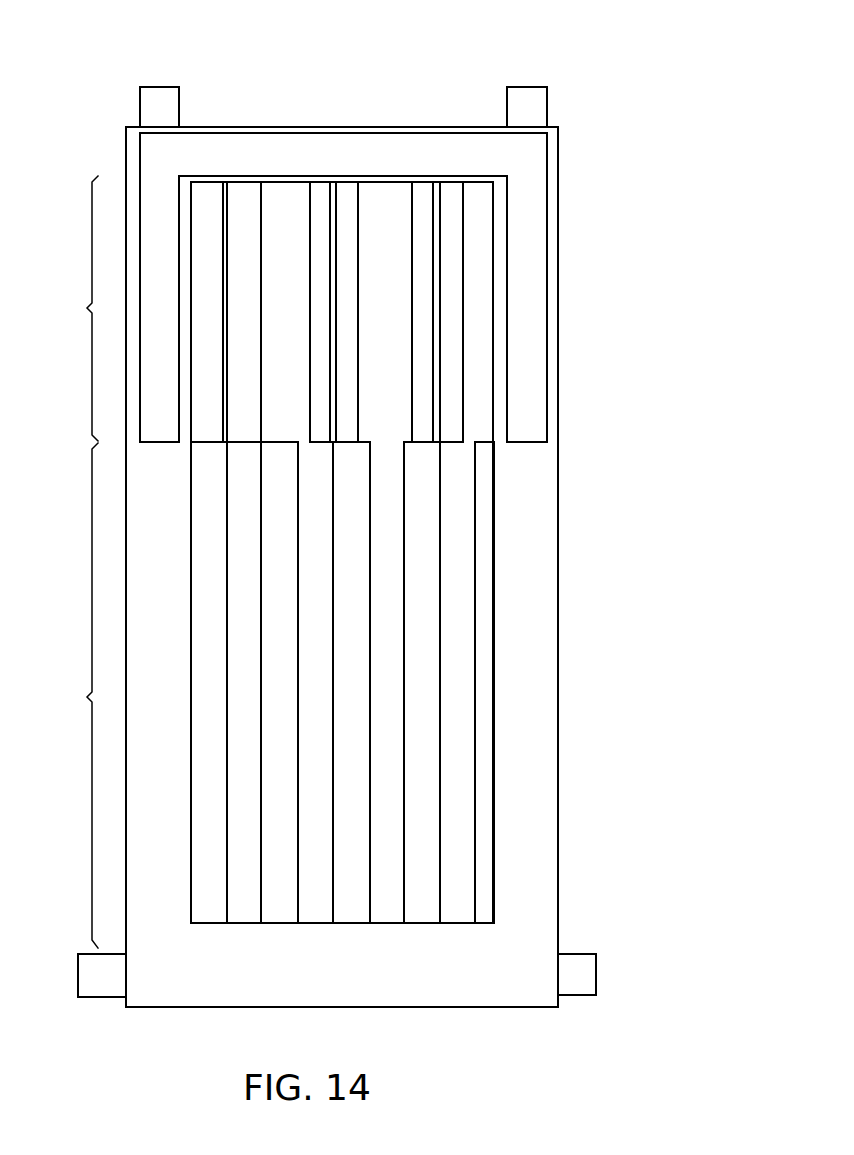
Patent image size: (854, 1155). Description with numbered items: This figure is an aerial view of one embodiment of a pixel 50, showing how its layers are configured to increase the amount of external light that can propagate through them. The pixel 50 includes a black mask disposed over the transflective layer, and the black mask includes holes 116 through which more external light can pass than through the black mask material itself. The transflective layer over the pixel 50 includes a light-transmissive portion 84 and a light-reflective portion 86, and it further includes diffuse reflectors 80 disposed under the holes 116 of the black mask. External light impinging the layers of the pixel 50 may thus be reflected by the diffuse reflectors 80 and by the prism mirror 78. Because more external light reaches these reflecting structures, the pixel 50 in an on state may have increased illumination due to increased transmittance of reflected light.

The pixel 50 is at (490, 43).
The prism mirror 78 is at (205, 358).
The diffuse reflectors 80 is at (400, 348).
The light-transmissive portion 84 is at (86, 697).
The light-reflective portion 86 is at (86, 308).
The holes 116 is at (534, 213).